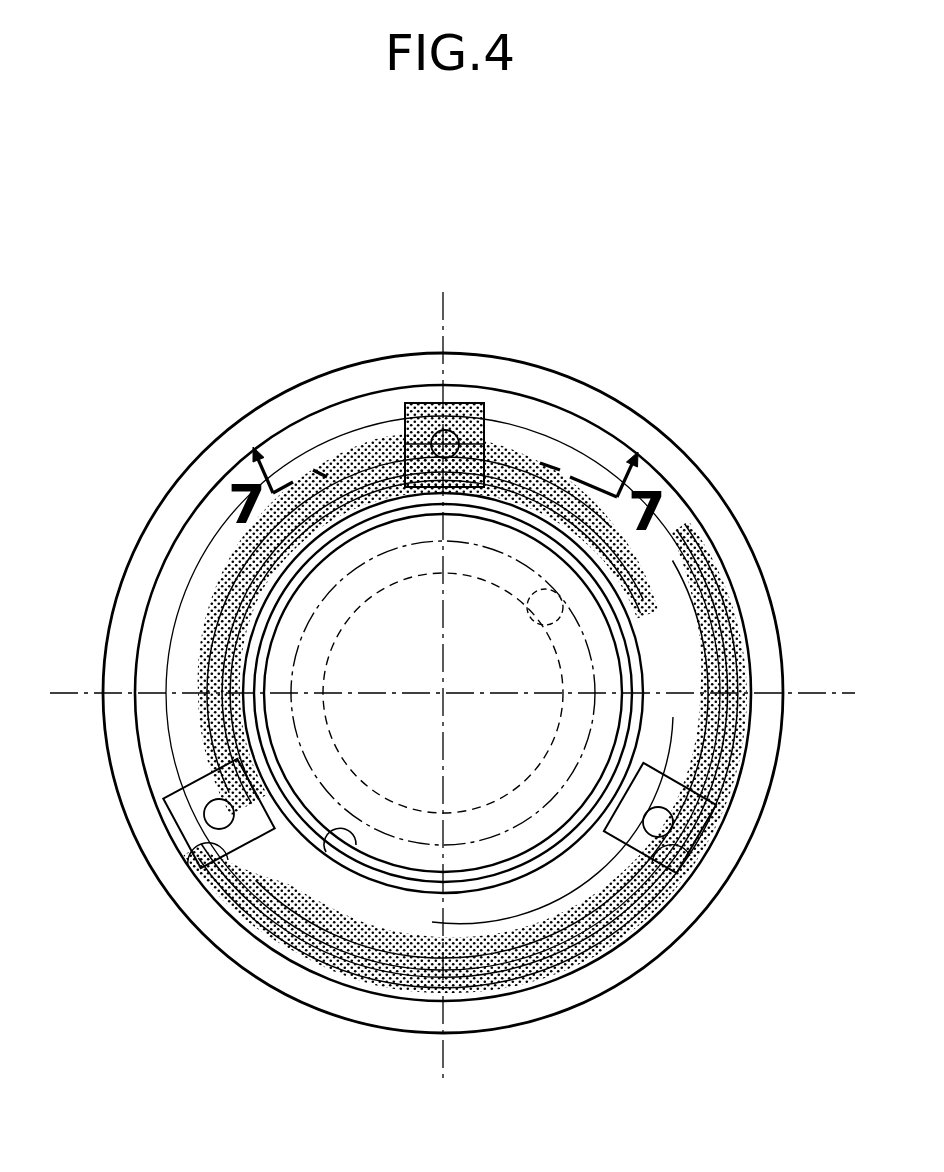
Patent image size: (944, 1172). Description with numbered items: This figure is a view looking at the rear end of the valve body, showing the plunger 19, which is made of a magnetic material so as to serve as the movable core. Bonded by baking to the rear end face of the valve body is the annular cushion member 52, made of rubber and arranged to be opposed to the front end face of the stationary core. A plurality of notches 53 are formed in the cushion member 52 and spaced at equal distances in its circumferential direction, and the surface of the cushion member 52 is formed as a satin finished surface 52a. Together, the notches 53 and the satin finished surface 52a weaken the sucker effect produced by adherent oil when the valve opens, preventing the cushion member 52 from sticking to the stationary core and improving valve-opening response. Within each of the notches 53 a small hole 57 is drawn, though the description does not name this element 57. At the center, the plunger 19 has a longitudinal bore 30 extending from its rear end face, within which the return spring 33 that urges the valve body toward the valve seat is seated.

The plunger 19 is at (732, 512).
The cushion member 52 is at (548, 418).
The satin finished surface 52a is at (715, 635).
The notches 53 is at (480, 427).
The mounting hole 57 is at (440, 431).
The return spring 33 is at (537, 603).
The longitudinal bore 30 is at (353, 830).